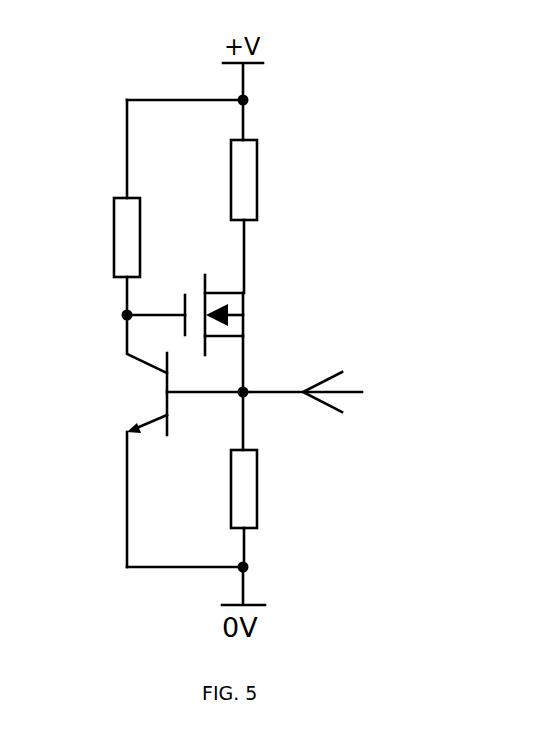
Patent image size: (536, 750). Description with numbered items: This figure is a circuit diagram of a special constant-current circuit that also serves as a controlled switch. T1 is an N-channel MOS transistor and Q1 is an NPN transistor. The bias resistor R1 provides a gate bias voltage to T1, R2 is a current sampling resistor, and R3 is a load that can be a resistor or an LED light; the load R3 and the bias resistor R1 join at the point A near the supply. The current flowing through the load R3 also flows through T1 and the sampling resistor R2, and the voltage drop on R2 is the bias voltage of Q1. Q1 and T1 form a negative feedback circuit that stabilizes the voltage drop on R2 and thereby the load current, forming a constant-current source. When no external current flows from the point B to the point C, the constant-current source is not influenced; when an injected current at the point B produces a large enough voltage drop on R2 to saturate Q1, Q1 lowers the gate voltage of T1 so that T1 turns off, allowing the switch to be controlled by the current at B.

The bias resistor R1 is at (101, 207).
The current sampling resistor R2 is at (258, 479).
The load R3 is at (217, 196).
The N-channel MOS transistor T1 is at (209, 333).
The NPN transistor Q1 is at (155, 441).
The point A is at (261, 100).
The point B is at (319, 392).
The point C is at (262, 564).